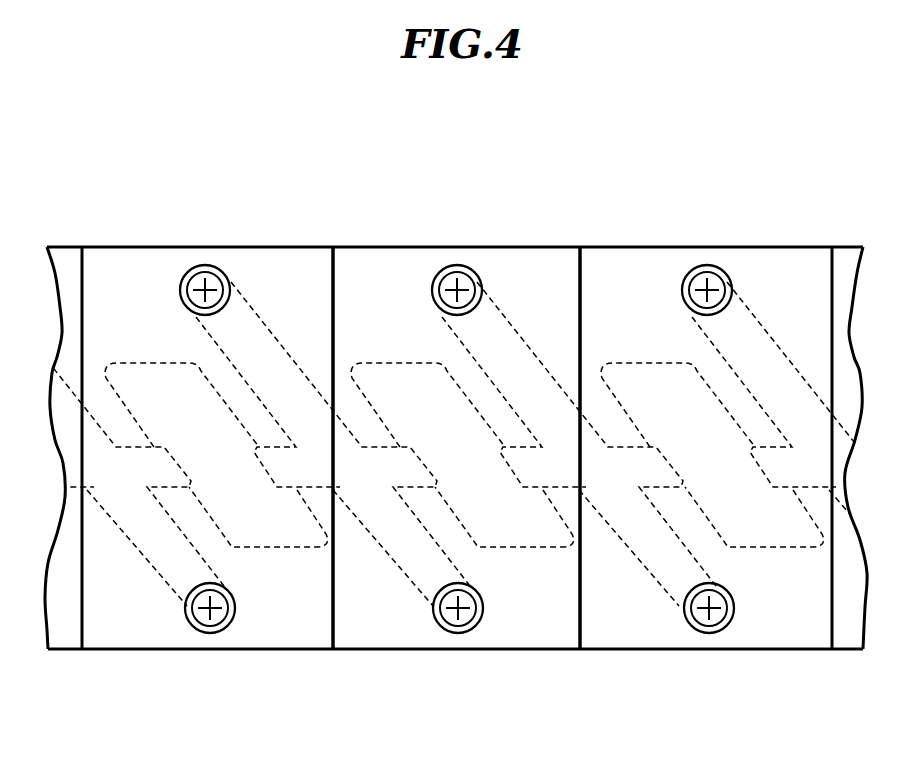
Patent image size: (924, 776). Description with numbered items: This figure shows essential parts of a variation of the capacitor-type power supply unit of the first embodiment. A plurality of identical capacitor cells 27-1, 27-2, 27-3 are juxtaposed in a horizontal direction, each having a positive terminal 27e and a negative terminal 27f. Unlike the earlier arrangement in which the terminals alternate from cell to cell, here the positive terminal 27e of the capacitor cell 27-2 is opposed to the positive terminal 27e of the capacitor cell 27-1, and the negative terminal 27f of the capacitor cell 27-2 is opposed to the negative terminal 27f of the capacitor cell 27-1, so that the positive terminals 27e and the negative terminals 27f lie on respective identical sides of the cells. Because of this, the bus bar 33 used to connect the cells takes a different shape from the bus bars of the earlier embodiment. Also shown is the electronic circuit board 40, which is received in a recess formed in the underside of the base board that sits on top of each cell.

The capacitor cell 27-1 is at (97, 241).
The capacitor cell 27-2 is at (365, 241).
The capacitor cell 27-3 is at (628, 241).
The positive terminal 27e is at (214, 266).
The negative terminal 27f is at (214, 633).
The bus bar 33 is at (158, 558).
The electronic circuit board 40 is at (148, 372).